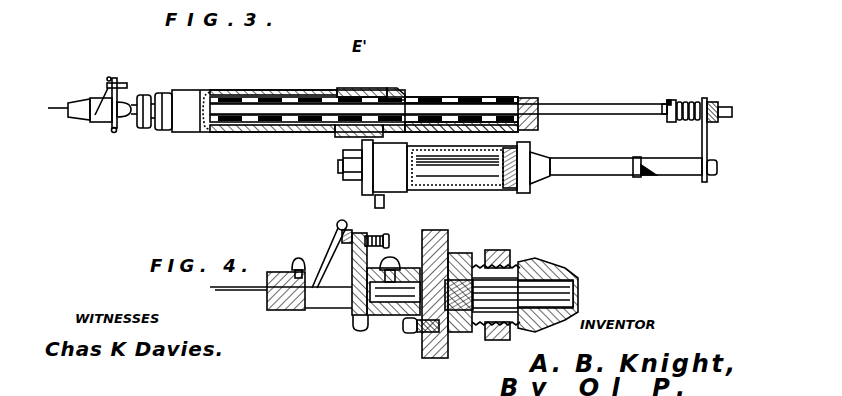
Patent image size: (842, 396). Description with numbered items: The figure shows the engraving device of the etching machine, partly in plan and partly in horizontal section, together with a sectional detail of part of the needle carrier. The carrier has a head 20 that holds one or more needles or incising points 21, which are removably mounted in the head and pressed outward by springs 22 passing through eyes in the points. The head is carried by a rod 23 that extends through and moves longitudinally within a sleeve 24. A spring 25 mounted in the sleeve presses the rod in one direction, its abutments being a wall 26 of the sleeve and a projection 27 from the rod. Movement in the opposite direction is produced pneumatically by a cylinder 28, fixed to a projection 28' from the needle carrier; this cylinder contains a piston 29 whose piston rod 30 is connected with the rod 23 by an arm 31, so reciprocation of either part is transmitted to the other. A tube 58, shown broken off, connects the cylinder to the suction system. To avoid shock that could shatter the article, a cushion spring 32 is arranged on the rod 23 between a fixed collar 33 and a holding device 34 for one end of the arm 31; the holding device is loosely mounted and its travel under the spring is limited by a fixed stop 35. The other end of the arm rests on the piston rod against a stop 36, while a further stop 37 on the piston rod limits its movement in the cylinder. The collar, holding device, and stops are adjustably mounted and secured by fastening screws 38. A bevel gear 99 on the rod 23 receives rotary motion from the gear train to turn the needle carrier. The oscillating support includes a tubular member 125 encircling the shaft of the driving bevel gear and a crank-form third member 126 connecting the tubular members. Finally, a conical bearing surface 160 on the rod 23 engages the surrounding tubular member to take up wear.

In FIG. 3, the head 20 is at (118, 112).
In FIG. 4, the head 20 is at (362, 298).
In FIG. 3, the incising points 21 is at (65, 108).
In FIG. 4, the incising points 21 is at (248, 290).
In FIG. 3, the springs 22 is at (106, 96).
In FIG. 4, the springs 22 is at (334, 243).
In FIG. 3, the rod 23 is at (593, 105).
In FIG. 4, the rod 23 is at (522, 290).
In FIG. 3, the sleeve 24 is at (252, 132).
In FIG. 3, the spring 25 is at (475, 98).
In FIG. 3, the wall 26 is at (228, 90).
In FIG. 3, the projection 27 is at (522, 98).
In FIG. 3, the cylinder 28 is at (457, 184).
In FIG. 3, the projection 28' is at (411, 168).
In FIG. 3, the piston 29 is at (504, 190).
In FIG. 3, the piston rod 30 is at (580, 159).
In FIG. 3, the arm 31 is at (708, 140).
In FIG. 3, the spring 32 is at (690, 101).
In FIG. 3, the collar 33 is at (670, 100).
In FIG. 3, the holding device 34 is at (713, 101).
In FIG. 3, the stop 35 is at (720, 118).
In FIG. 3, the stop 36 is at (717, 168).
In FIG. 3, the stop 37 is at (637, 178).
In FIG. 3, the fastening screws 38 is at (667, 121).
In FIG. 3, the tube 58 is at (384, 204).
In FIG. 3, the bevel gear 99 is at (395, 90).
In FIG. 3, the tubular member 125 is at (292, 90).
In FIG. 3, the third member 126 is at (362, 88).
In FIG. 4, the conical bearing surface 160 is at (557, 258).